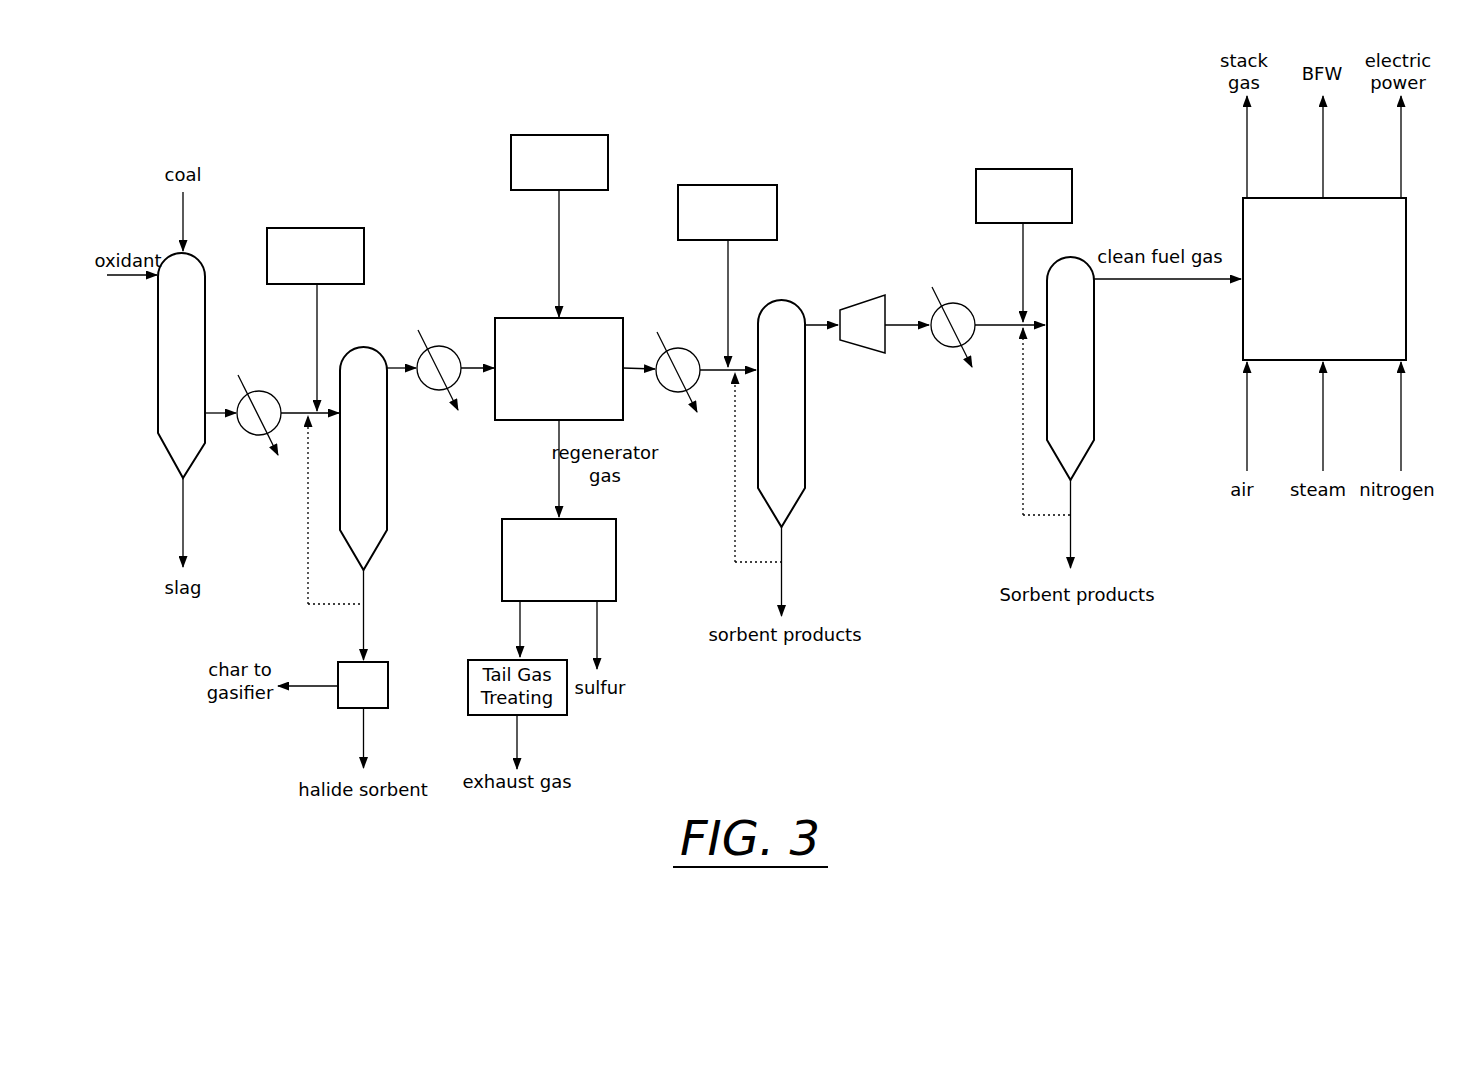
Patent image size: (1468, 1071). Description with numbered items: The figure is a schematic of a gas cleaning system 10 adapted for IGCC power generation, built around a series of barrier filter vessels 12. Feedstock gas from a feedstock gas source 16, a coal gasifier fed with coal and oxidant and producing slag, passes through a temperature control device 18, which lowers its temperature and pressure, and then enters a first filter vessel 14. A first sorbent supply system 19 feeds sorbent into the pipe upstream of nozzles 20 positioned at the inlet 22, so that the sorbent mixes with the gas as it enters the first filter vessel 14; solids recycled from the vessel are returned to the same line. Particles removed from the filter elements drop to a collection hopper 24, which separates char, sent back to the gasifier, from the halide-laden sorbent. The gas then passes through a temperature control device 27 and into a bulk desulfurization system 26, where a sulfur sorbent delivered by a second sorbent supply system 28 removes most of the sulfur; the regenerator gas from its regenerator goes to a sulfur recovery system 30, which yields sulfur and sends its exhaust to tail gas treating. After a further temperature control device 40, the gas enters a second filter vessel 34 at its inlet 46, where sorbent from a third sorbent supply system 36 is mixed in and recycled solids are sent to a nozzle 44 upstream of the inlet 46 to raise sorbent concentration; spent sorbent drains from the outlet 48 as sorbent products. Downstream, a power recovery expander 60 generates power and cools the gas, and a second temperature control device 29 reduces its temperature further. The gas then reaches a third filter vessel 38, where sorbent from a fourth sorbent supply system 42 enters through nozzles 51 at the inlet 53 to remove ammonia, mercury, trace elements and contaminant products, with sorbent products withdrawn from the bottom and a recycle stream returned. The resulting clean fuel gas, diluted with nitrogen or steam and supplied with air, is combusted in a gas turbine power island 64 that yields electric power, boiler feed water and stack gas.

The gas cleaning system 10 is at (488, 135).
The filter vessels 12 is at (391, 462).
The first filter vessel 14 is at (344, 348).
The feedstock gas source 16 is at (160, 425).
The temperature control device 18 is at (251, 435).
The first sorbent supply system 19 is at (364, 257).
The nozzles 20 is at (328, 416).
The inlet 22 is at (338, 418).
The collection hopper 24 is at (389, 700).
The bulk desulfurization system 26 is at (603, 318).
The temperature control device 27 is at (440, 346).
The second sorbent supply system 28 is at (608, 163).
The second temperature control device 29 is at (958, 347).
The sulfur recovery system 30 is at (617, 557).
The second filter vessel 34 is at (782, 300).
The third sorbent supply system 36 is at (777, 213).
The third filter vessel 38 is at (1097, 380).
The temperature control device 40 is at (679, 348).
The fourth sorbent supply system 42 is at (976, 205).
The nozzle 44 is at (745, 385).
The inlet 46 is at (757, 370).
The outlet 48 is at (782, 528).
The nozzles 51 is at (1033, 320).
The inlet 53 is at (1046, 333).
The power recovery expander 60 is at (851, 308).
The gas turbine power island 64 is at (1243, 215).